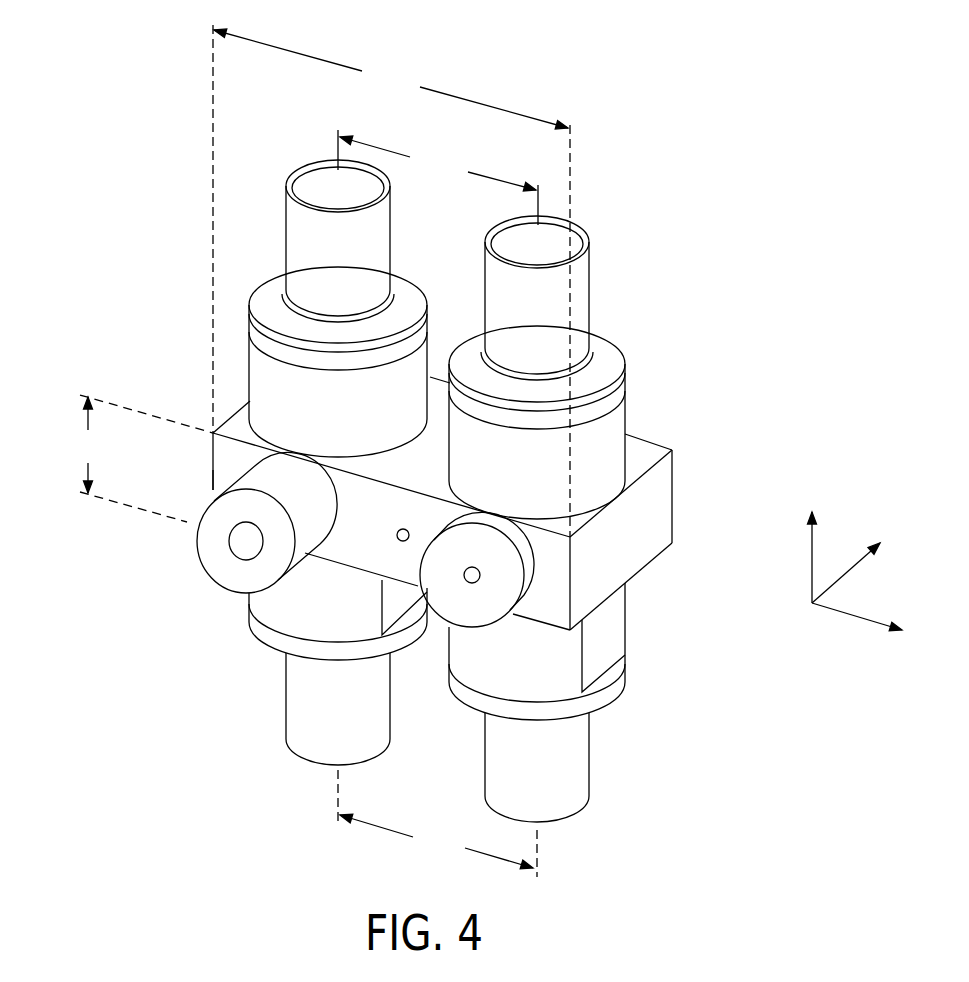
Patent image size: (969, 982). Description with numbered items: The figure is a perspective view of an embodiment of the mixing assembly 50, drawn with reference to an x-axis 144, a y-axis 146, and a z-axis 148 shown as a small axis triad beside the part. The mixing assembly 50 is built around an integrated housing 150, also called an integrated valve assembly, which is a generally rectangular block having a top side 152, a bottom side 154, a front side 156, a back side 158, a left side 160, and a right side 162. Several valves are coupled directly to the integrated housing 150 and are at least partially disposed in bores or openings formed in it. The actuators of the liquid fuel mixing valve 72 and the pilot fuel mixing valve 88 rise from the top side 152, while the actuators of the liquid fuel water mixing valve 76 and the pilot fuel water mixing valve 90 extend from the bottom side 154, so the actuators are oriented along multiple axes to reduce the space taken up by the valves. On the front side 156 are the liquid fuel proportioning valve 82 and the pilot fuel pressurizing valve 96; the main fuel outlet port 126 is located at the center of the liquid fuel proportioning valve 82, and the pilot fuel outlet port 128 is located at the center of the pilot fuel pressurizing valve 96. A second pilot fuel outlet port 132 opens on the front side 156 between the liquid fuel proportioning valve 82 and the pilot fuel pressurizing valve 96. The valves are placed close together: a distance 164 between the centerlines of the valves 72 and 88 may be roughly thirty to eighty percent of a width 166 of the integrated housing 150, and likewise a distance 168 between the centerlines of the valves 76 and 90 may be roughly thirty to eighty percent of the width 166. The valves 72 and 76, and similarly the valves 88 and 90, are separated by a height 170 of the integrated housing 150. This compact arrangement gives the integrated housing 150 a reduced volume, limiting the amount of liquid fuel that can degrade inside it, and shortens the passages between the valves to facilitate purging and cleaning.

The mixing assembly 50 is at (145, 187).
The liquid fuel mixing valve 72 is at (260, 268).
The pilot fuel mixing valve 88 is at (620, 330).
The liquid fuel water mixing valve 76 is at (267, 660).
The pilot fuel water mixing valve 90 is at (608, 715).
The liquid fuel proportioning valve 82 is at (190, 567).
The pilot fuel pressurizing valve 96 is at (430, 635).
The main fuel outlet port 126 is at (231, 530).
The pilot fuel outlet port 128 is at (480, 578).
The second pilot fuel outlet port 132 is at (398, 531).
The integrated housing 150 is at (650, 440).
The top side 152 is at (642, 465).
The bottom side 154 is at (643, 570).
The front side 156 is at (228, 462).
The back side 158 is at (438, 378).
The left side 160 is at (250, 418).
The right side 162 is at (667, 508).
The distance 164 is at (438, 177).
The width 166 is at (391, 281).
The distance 168 is at (437, 823).
The height 170 is at (141, 458).
The x-axis 144 is at (847, 615).
The y-axis 146 is at (840, 578).
The z-axis 148 is at (812, 567).